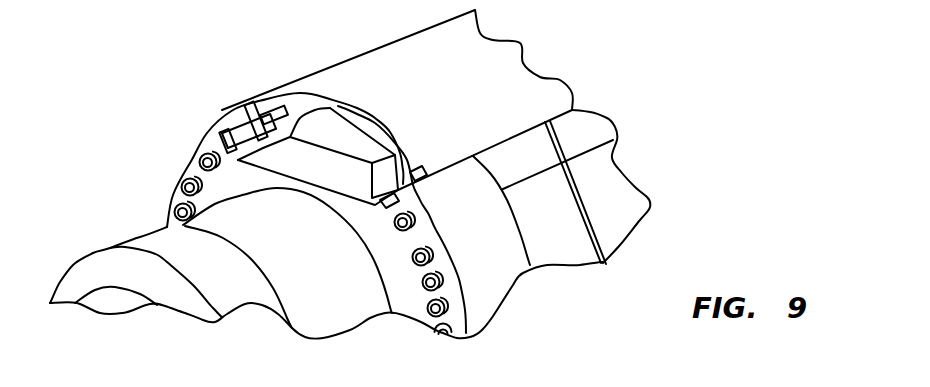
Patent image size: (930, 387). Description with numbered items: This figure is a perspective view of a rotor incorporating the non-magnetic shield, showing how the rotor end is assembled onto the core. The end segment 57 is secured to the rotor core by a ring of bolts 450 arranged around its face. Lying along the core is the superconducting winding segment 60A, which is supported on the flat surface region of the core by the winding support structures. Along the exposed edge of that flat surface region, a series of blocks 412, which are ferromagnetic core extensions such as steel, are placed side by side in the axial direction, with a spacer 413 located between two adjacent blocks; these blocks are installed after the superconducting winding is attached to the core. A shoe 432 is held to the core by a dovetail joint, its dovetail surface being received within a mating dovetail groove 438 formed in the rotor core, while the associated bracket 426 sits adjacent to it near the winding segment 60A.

The end segment 57 is at (140, 243).
The superconducting winding segment 60A is at (345, 130).
The blocks 412 is at (527, 162).
The spacer 413 is at (530, 160).
The bracket block 426 is at (287, 107).
The shoe 432 is at (257, 113).
The dovetail groove 438 is at (232, 113).
The bolts 450 is at (177, 178).